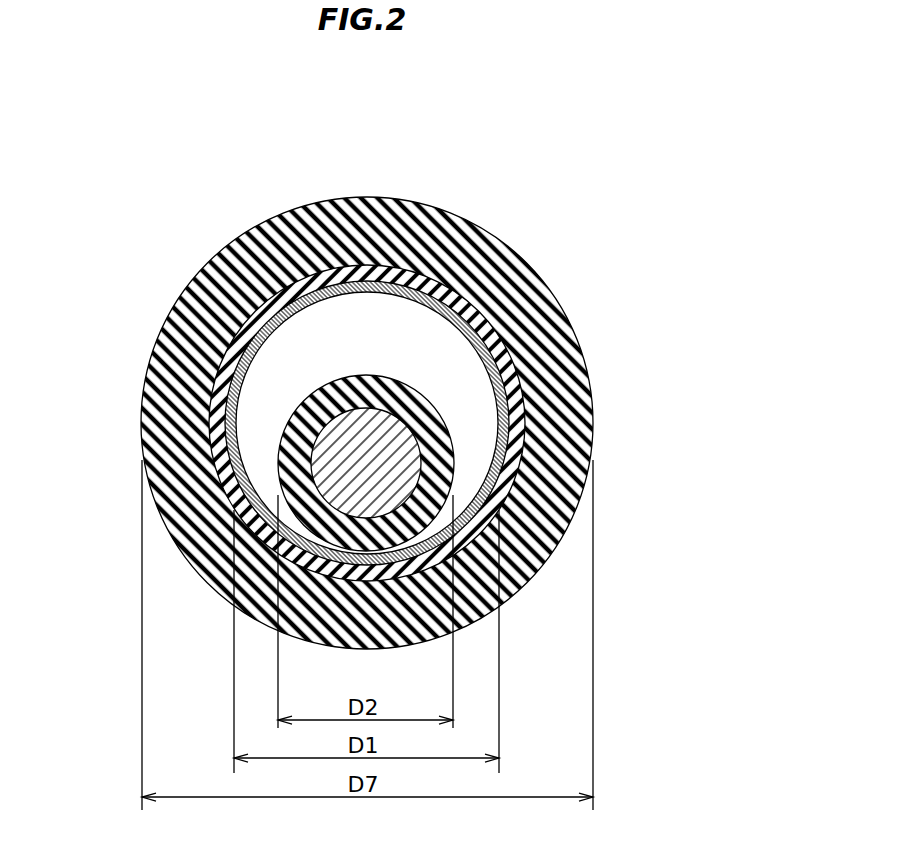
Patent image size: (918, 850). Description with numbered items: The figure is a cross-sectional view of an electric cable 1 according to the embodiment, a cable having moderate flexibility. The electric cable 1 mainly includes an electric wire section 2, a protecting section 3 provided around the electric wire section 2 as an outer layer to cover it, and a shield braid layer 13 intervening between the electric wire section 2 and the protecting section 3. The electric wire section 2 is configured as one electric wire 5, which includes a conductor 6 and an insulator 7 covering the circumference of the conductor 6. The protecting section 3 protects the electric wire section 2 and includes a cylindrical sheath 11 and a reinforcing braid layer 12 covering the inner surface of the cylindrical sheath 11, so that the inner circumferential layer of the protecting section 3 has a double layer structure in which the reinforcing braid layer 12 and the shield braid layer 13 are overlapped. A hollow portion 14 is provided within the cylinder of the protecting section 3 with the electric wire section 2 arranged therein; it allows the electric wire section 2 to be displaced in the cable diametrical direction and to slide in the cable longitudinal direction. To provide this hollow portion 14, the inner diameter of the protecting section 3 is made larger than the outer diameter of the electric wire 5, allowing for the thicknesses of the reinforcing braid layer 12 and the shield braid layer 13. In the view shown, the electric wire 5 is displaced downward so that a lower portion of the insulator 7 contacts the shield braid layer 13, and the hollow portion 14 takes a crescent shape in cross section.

The electric cable 1 is at (454, 150).
The electric wire section 2 is at (418, 373).
The protecting section 3 is at (160, 156).
The electric wire 5 is at (638, 270).
The conductor 6 is at (418, 432).
The insulator 7 is at (398, 445).
The cylindrical sheath 11 is at (233, 255).
The reinforcing braid layer 12 is at (287, 290).
The shield braid layer 13 is at (325, 290).
The hollow portion 14 is at (369, 325).